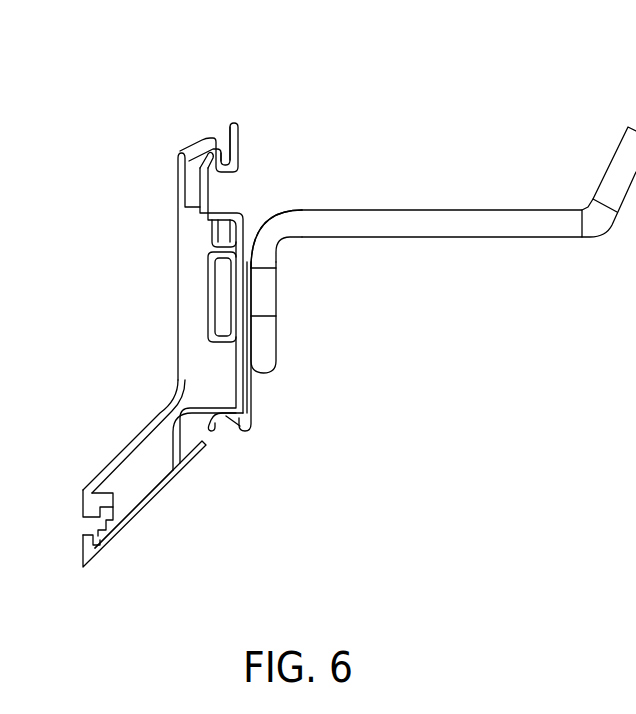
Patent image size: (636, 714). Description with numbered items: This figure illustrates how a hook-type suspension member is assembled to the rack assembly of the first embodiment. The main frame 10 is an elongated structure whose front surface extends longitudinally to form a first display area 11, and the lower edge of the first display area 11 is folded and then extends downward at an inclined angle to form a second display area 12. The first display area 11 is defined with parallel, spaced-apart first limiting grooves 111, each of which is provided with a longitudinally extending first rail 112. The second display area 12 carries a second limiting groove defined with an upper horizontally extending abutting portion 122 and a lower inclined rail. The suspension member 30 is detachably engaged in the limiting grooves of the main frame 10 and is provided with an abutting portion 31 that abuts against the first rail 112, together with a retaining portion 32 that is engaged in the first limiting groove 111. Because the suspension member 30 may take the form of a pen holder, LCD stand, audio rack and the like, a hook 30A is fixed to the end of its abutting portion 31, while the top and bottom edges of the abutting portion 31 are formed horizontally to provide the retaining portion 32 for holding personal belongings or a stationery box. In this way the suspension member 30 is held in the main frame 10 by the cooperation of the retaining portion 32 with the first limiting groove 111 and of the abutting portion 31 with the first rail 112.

The main frame 10 is at (148, 292).
The first display area 11 is at (245, 145).
The first limiting groove 111 is at (218, 192).
The first rail 112 is at (235, 233).
The second display area 12 is at (133, 535).
The abutting portion 122 is at (240, 428).
The suspension member 30 is at (328, 328).
The hook 30A is at (383, 232).
The abutting portion 31 is at (268, 218).
The retaining portion 32 is at (190, 140).